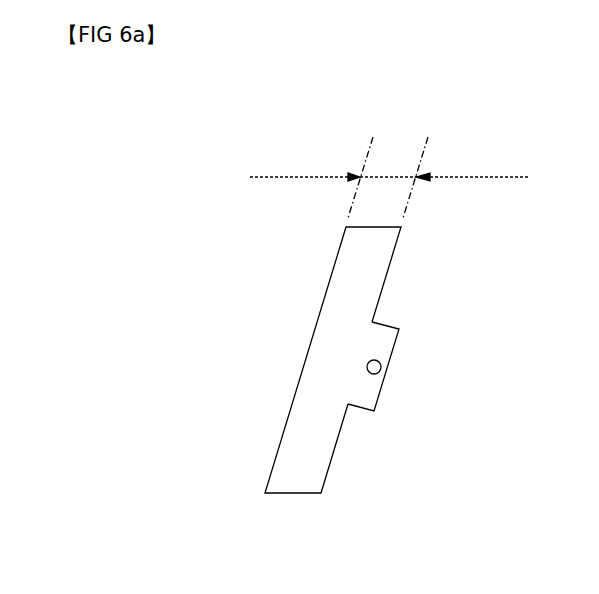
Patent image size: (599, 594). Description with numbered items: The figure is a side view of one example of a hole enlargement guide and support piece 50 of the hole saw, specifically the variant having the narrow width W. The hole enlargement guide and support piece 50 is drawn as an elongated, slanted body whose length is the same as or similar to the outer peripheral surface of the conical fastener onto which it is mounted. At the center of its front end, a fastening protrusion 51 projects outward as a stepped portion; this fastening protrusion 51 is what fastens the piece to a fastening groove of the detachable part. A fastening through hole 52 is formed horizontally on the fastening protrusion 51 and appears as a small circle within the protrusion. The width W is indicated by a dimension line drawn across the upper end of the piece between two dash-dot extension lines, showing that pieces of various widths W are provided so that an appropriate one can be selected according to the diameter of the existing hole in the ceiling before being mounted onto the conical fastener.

The hole enlargement guide and support piece 50 is at (310, 414).
The fastening protrusion 51 is at (385, 343).
The fastening through hole 52 is at (378, 372).
The width W is at (390, 161).